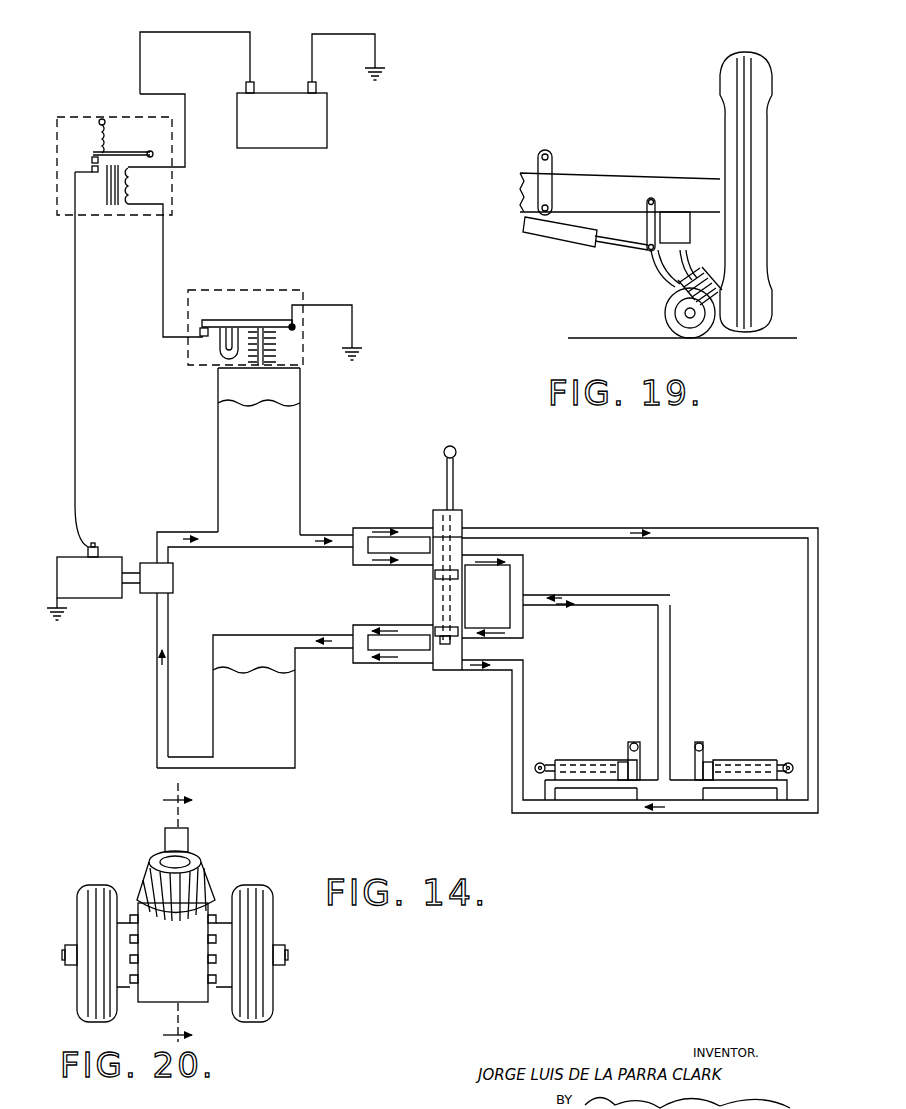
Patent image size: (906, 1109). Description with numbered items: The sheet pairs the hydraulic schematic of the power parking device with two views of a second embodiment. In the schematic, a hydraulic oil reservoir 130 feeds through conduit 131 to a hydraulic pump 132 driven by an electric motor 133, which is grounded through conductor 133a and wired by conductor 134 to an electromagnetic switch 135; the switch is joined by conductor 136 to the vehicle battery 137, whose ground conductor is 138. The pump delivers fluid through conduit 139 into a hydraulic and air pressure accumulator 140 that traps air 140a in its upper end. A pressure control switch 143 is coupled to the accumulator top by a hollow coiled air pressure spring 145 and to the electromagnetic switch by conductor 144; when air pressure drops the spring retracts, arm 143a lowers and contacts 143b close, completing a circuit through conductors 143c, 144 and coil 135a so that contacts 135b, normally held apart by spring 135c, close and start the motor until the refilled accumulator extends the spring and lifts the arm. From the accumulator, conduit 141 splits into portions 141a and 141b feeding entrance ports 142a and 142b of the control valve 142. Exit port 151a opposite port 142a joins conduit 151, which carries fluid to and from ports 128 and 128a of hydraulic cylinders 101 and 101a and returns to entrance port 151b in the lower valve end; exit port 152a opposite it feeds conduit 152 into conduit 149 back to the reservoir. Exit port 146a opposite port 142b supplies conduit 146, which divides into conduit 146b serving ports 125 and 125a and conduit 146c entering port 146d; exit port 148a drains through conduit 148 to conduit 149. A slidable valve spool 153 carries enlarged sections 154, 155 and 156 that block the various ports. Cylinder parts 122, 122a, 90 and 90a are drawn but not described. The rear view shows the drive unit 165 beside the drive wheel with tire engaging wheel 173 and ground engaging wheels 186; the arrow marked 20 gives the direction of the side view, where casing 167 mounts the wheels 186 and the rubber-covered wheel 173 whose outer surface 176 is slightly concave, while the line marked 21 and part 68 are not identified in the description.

In FIG. 14, the conductor 136 is at (192, 33).
In FIG. 14, the vehicle battery 137 is at (280, 150).
In FIG. 14, the ground conductor 138 is at (377, 57).
In FIG. 14, the electromagnetic switch 135 is at (145, 149).
In FIG. 14, the coil 135a is at (131, 182).
In FIG. 14, the electromagnetic contacts 135b is at (90, 150).
In FIG. 14, the spring 135c is at (112, 146).
In FIG. 14, the conductor 134 is at (76, 407).
In FIG. 14, the conductor 144 is at (165, 243).
In FIG. 14, the pressure control switch 143 is at (273, 325).
In FIG. 14, the arm 143a is at (258, 322).
In FIG. 14, the contacts 143b is at (203, 346).
In FIG. 14, the conductor 143c is at (330, 302).
In FIG. 14, the air pressure spring 145 is at (277, 348).
In FIG. 14, the hydraulic and air pressure accumulator 140 is at (302, 451).
In FIG. 14, the air 140a is at (287, 392).
In FIG. 14, the electric motor 133 is at (91, 602).
In FIG. 14, the conductor 133a is at (92, 596).
In FIG. 14, the hydraulic pump 132 is at (174, 580).
In FIG. 14, the conduit 139 is at (181, 532).
In FIG. 14, the conduit 141 is at (302, 534).
In FIG. 14, the conduit portion 141a is at (375, 522).
In FIG. 14, the conduit portion 141b is at (373, 562).
In FIG. 14, the conduit 131 is at (156, 693).
In FIG. 14, the hydraulic oil reservoir 130 is at (246, 769).
In FIG. 14, the conduit 149 is at (305, 633).
In FIG. 14, the control valve 142 is at (516, 601).
In FIG. 14, the entrance port 142a is at (430, 507).
In FIG. 14, the entrance port 142b is at (425, 560).
In FIG. 14, the valve spool 153 is at (455, 462).
In FIG. 14, the enlarged section 154 is at (447, 520).
In FIG. 14, the enlarged section 156 is at (445, 645).
In FIG. 14, the conduit 148 is at (380, 613).
In FIG. 14, the exit port 148a is at (430, 617).
In FIG. 14, the conduit 152 is at (356, 664).
In FIG. 14, the exit port 152a is at (412, 665).
In FIG. 14, the conduit 146 is at (595, 641).
In FIG. 14, the exit port 146a is at (470, 553).
In FIG. 14, the conduit 146b is at (671, 666).
In FIG. 14, the conduit 146c is at (512, 640).
In FIG. 14, the entrance port 146d is at (467, 625).
In FIG. 14, the enlarged section 155 is at (489, 596).
In FIG. 14, the conduit 151 is at (637, 647).
In FIG. 14, the exit port 151a is at (470, 525).
In FIG. 14, the entrance port 151b is at (456, 662).
In FIG. 14, the port 128 is at (737, 777).
In FIG. 14, the port 128a is at (567, 777).
In FIG. 14, the port 125 is at (690, 765).
In FIG. 14, the port 125a is at (632, 782).
In FIG. 14, the arm 122 is at (705, 782).
In FIG. 14, the arm 122a is at (634, 745).
In FIG. 14, the hydraulic cylinder 101 is at (762, 762).
In FIG. 14, the hydraulic cylinder 101a is at (590, 760).
In FIG. 14, the pivot 90 is at (793, 765).
In FIG. 14, the pivot 90a is at (542, 770).
In FIG. 19, the arrow 20 is at (782, 333).
In FIG. 19, the ground engaging wheel 186 is at (690, 335).
In FIG. 20, the ground engaging wheel 186 is at (271, 1005).
In FIG. 19, the tire engaging wheel 173 is at (700, 276).
In FIG. 20, the tire engaging wheel 173 is at (191, 862).
In FIG. 19, the drive unit 165 is at (663, 313).
In FIG. 20, the section line 21 is at (163, 914).
In FIG. 20, the shaft 68 is at (182, 836).
In FIG. 20, the outer surface 176 is at (200, 878).
In FIG. 20, the casing 167 is at (180, 993).